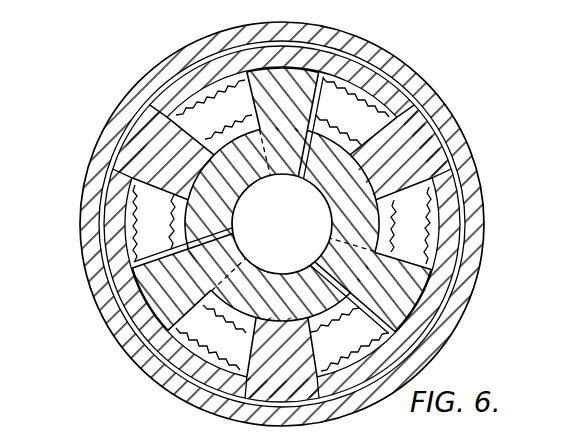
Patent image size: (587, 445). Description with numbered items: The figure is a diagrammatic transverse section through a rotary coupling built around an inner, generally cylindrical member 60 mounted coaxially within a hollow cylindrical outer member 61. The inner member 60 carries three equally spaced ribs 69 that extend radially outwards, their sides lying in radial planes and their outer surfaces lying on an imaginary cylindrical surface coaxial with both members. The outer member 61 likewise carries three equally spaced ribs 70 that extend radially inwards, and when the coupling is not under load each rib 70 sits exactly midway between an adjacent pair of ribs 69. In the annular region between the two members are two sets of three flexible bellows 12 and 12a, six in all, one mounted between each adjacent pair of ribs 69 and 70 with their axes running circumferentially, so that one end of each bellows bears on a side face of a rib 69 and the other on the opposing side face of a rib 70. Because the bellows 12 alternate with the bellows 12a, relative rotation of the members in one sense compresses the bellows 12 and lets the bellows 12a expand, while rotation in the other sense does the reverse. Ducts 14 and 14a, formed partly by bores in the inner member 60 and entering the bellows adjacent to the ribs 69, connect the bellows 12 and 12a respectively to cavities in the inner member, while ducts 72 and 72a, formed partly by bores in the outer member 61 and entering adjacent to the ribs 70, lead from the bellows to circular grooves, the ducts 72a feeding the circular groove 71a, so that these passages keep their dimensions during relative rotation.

The flexible bellows 12 is at (261, 224).
The flexible bellows 12a is at (303, 225).
The duct 14 is at (262, 132).
The duct 14a is at (226, 276).
The inner member 60 is at (345, 205).
The outer member 61 is at (432, 340).
The rib 69 is at (285, 66).
The rib 70 is at (130, 158).
The circular groove 71a is at (220, 50).
The duct 72 is at (185, 172).
The duct 72a is at (247, 385).